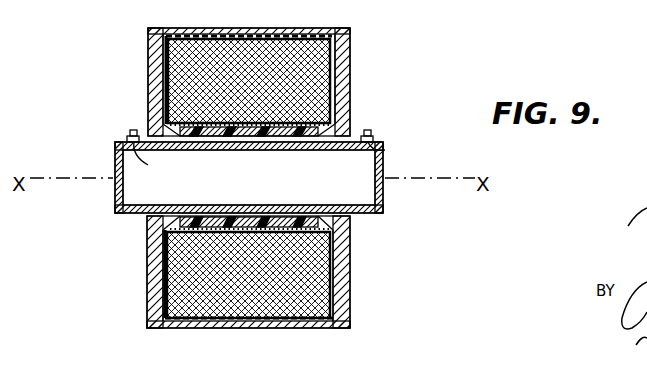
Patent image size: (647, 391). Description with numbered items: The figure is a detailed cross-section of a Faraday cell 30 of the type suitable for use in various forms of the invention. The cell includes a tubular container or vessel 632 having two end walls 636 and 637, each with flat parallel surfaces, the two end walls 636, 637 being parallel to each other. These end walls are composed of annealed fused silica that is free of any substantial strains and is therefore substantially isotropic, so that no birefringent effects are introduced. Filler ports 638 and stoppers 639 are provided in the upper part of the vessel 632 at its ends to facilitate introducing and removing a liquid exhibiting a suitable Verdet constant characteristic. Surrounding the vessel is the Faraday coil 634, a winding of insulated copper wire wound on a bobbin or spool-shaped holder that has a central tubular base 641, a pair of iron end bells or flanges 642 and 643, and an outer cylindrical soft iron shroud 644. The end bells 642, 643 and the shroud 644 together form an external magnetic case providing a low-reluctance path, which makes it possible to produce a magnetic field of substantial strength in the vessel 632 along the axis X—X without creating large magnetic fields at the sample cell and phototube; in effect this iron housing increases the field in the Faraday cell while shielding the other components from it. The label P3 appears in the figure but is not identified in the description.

The Faraday cell 30 is at (369, 296).
The vessel 632 is at (378, 168).
The Faraday coil 634 is at (172, 80).
The end wall 636 is at (118, 204).
The end wall 637 is at (380, 201).
The filler port 638 is at (403, 139).
The stopper 639 is at (133, 130).
The central tubular base 641 is at (257, 131).
The iron end bell 642 is at (161, 289).
The iron end bell 643 is at (343, 76).
The outer cylindrical soft iron shroud 644 is at (313, 328).
The pole piece P3 is at (282, 131).